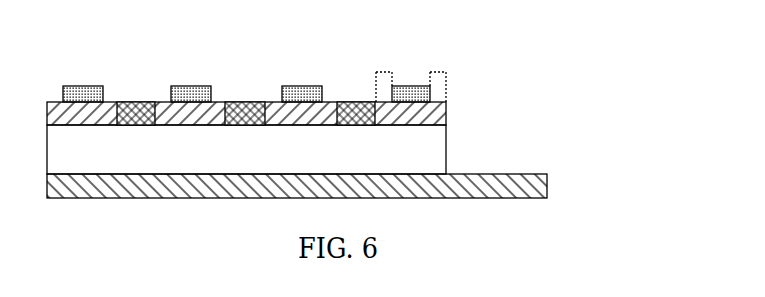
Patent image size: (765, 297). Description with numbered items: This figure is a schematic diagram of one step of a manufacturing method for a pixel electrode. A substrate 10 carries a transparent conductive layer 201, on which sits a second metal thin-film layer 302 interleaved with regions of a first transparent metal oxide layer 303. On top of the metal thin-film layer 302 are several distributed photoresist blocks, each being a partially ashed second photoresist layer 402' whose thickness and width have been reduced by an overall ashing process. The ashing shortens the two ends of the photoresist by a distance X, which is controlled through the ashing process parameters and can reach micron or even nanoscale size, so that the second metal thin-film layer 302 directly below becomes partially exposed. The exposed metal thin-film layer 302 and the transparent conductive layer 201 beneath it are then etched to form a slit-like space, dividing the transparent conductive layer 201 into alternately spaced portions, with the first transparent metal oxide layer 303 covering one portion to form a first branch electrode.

The substrate 10 is at (548, 187).
The transparent conductive layer 201 is at (435, 160).
The second metal thin-film layer 302 is at (447, 109).
The first transparent metal oxide layer 303 is at (350, 103).
The partially ashed second photoresist layer 402' is at (251, 72).
The distance X is at (383, 68).